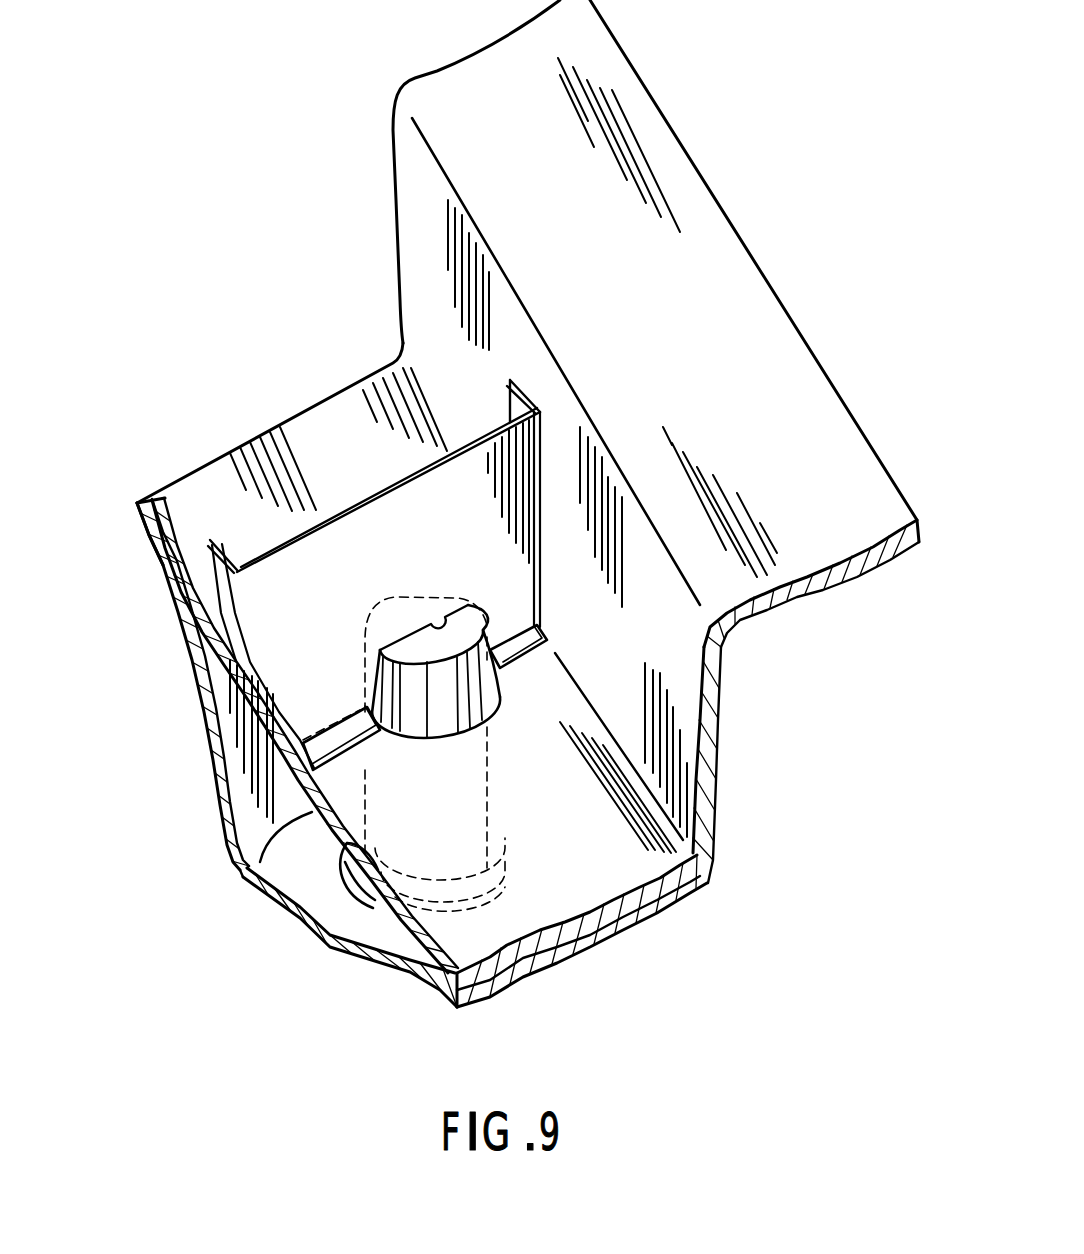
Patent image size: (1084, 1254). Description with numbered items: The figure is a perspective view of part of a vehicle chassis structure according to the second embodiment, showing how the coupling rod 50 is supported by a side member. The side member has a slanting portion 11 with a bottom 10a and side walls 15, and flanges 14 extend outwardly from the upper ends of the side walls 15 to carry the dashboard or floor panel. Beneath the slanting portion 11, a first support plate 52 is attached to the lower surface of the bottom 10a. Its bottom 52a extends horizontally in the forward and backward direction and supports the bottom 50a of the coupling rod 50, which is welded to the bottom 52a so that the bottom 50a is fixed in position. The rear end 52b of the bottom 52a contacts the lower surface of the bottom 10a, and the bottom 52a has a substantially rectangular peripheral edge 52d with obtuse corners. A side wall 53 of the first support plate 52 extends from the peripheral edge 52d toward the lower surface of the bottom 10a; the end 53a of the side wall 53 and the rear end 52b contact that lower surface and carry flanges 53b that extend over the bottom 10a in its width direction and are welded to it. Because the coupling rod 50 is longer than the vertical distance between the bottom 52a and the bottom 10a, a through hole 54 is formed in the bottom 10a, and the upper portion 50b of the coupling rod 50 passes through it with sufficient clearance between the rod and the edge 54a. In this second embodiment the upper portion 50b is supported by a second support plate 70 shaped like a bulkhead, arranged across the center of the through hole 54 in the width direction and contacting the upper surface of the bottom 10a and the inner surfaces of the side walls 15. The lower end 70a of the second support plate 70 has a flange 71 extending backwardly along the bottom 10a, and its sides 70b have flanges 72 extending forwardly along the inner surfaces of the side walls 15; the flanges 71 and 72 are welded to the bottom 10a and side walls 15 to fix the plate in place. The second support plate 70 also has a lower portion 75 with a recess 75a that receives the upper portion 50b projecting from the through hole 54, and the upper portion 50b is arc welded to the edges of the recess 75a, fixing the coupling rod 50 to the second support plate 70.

The slanting portion 11 is at (402, 272).
The flanges 14 is at (828, 413).
The side walls 15 is at (690, 748).
The bottom 10a is at (305, 428).
The second support plate 70 is at (322, 560).
The flanges 72 is at (525, 383).
The sides 70b is at (540, 410).
The lower end 70a is at (327, 730).
The flange 71 is at (520, 652).
The lower portion 75 is at (357, 703).
The recess 75a is at (440, 624).
The through hole 54 is at (502, 712).
The edge 54a is at (473, 740).
The coupling rod 50 is at (460, 795).
The bottom 50a is at (507, 893).
The upper portion 50b is at (486, 628).
The side wall 53 is at (213, 767).
The end 53a is at (168, 553).
The flanges 53b is at (143, 530).
The first support plate 52 is at (225, 849).
The bottom 52a is at (367, 900).
The rear end 52b is at (458, 1010).
The peripheral edge 52d is at (278, 847).